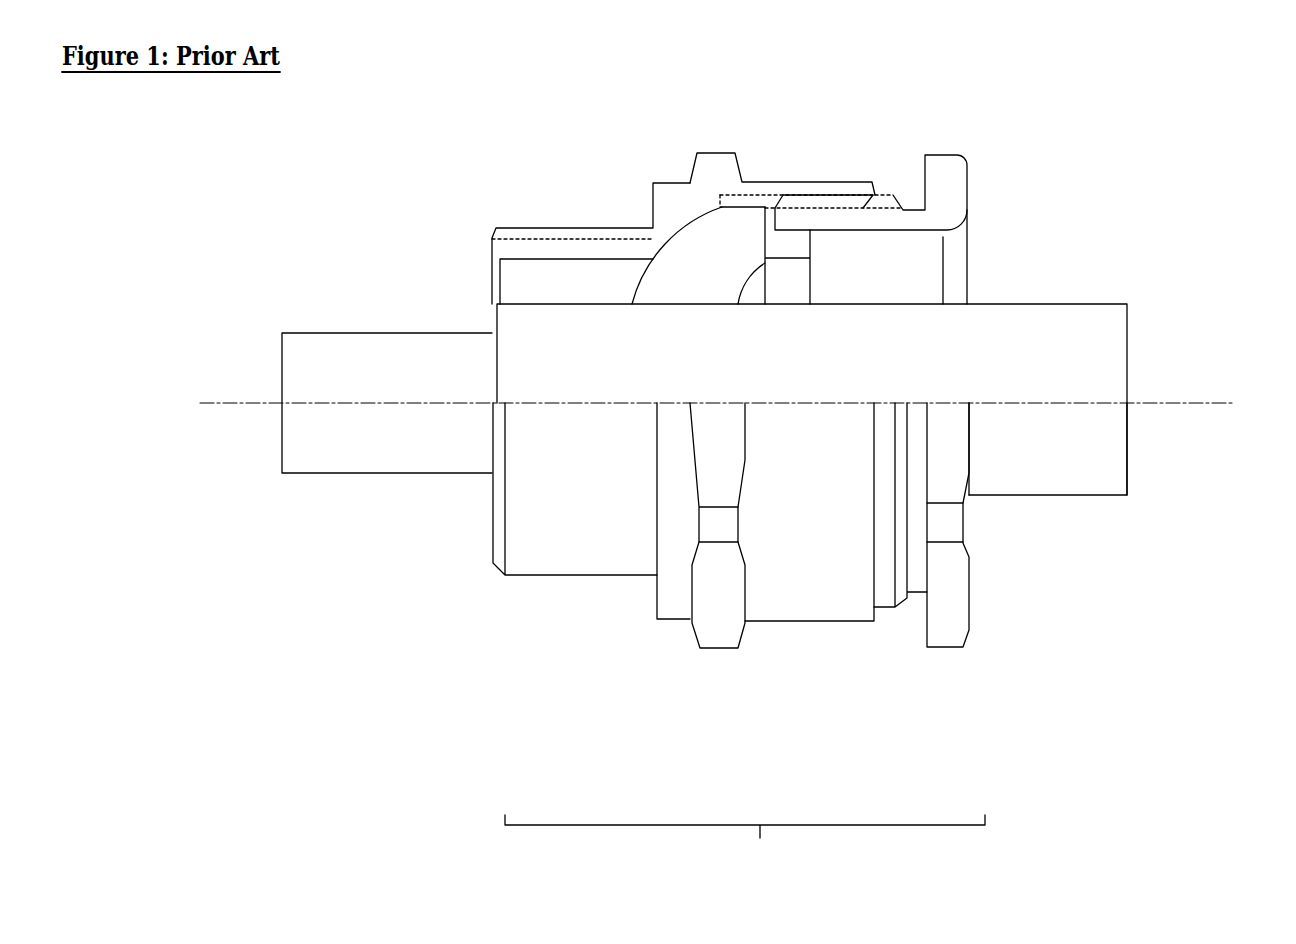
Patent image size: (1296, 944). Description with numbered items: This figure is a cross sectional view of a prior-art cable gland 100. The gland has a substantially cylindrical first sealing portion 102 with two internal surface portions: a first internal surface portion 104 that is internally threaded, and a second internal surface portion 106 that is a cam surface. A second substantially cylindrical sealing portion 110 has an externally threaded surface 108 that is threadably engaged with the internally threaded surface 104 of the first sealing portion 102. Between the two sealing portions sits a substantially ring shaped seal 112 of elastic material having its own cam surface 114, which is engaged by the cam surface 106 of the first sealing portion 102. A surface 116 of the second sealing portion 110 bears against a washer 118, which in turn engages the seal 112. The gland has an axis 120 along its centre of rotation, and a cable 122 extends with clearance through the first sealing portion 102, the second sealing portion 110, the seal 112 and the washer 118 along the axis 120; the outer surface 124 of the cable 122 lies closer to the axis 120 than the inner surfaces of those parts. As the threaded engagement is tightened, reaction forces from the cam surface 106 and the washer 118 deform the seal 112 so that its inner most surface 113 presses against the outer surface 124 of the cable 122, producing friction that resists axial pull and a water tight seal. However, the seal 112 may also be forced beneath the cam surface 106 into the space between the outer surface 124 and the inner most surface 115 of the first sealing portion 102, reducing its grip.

The cable gland 100 is at (745, 844).
The first sealing portion 102 is at (808, 590).
The first internal surface portion 104 is at (806, 122).
The second internal surface portion 106 is at (707, 267).
The externally threaded surface 108 is at (885, 583).
The second sealing portion 110 is at (946, 591).
The seal 112 is at (782, 125).
The inner most surface 113 is at (680, 343).
The cam surface 114 is at (707, 268).
The inner most surface 115 is at (524, 238).
The surface 116 is at (872, 134).
The washer 118 is at (922, 193).
The axis 120 is at (737, 394).
The cable 122 is at (1055, 461).
The outer surface 124 is at (1069, 299).